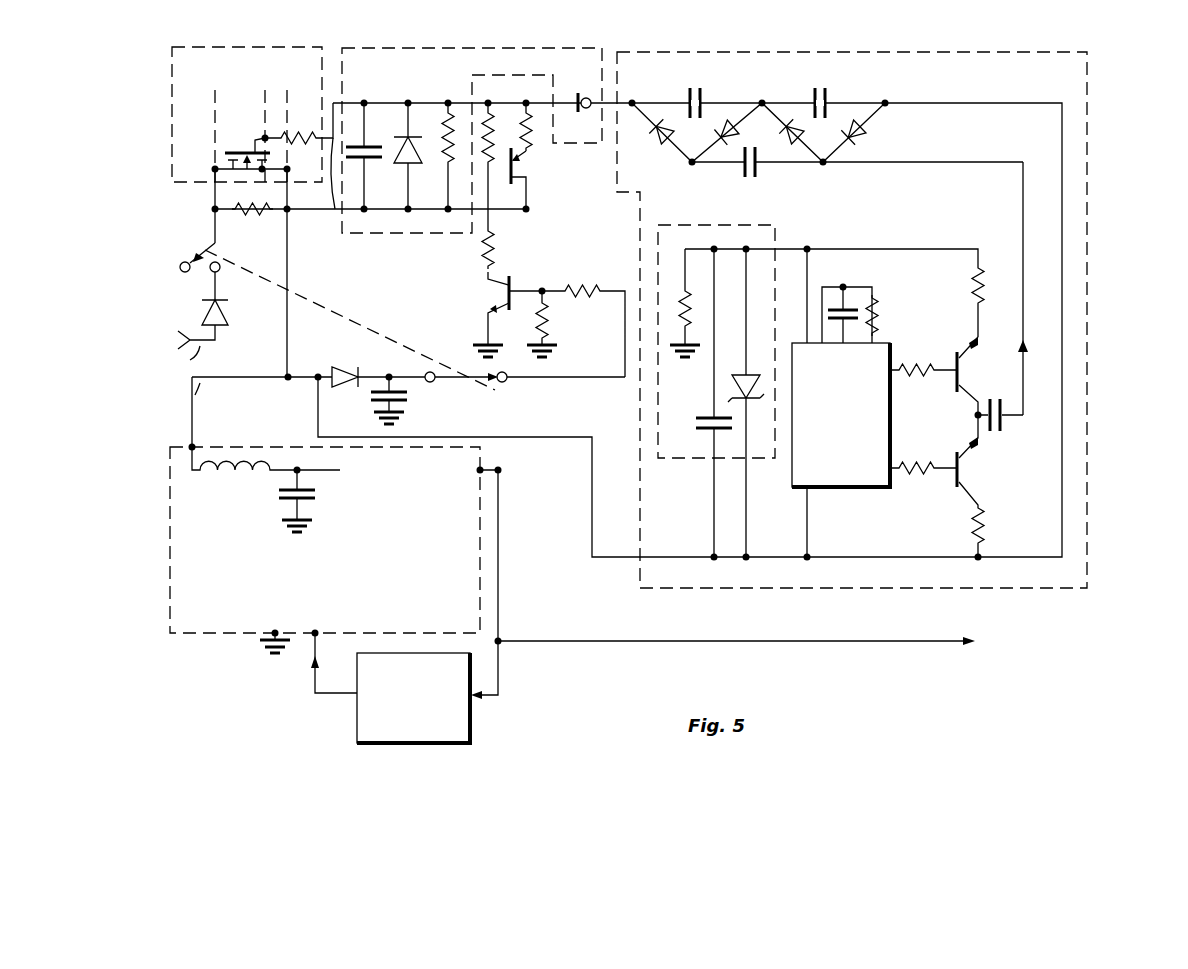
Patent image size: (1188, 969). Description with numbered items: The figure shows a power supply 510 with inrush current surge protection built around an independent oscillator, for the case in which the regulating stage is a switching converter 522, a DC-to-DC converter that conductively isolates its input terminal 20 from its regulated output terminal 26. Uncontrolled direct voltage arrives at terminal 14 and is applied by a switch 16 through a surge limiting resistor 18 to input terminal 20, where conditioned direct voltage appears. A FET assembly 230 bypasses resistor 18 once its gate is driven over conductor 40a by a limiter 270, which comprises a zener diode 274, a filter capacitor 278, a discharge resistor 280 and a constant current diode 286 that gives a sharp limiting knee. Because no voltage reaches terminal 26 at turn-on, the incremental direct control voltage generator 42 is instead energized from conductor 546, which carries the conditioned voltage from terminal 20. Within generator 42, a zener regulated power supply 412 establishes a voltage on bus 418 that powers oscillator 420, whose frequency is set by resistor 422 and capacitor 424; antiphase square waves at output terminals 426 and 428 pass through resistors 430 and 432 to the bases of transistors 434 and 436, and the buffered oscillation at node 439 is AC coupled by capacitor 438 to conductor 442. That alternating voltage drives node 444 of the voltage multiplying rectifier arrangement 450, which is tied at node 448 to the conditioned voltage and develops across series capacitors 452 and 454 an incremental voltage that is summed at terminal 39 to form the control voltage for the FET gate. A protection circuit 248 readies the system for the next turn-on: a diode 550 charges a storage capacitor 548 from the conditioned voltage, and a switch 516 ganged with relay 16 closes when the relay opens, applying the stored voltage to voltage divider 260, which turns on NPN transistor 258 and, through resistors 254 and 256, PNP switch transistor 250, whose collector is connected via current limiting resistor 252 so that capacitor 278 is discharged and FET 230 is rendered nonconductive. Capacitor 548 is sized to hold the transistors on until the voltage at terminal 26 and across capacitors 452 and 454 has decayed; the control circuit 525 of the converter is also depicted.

The input terminal 14 is at (193, 335).
The switch 16 is at (205, 252).
The surge limiting resistor 18 is at (248, 212).
The input terminal 20 is at (194, 446).
The output terminal 26 is at (500, 471).
The output terminal of the control voltage generator 39 is at (632, 102).
The conductor 40a is at (335, 200).
The incremental direct control voltage generator 42 is at (895, 222).
The FET assembly 230 is at (172, 90).
The protection circuit 248 is at (546, 247).
The PNP switch transistor 250 is at (510, 174).
The current limiting resistor 252 is at (530, 150).
The resistor 254 is at (488, 110).
The resistor 256 is at (494, 265).
The NPN transistor 258 is at (506, 291).
The voltage divider 260 is at (599, 329).
The limiter 270 is at (409, 82).
The zener diode 274 is at (406, 166).
The capacitor 278 is at (367, 145).
The resistor 280 is at (446, 138).
The constant current diode 286 is at (590, 108).
The zener regulated power supply 412 is at (665, 380).
The bus 418 is at (975, 250).
The oscillator 420 is at (870, 487).
The resistor 422 is at (877, 314).
The capacitor 424 is at (845, 289).
The output terminal 426 is at (892, 368).
The output terminal 428 is at (892, 466).
The resistor 430 is at (933, 376).
The resistor 432 is at (931, 474).
The transistor 434 is at (962, 350).
The transistor 436 is at (962, 468).
The capacitor 438 is at (1003, 400).
The node 439 is at (975, 416).
The conductor 442 is at (1023, 186).
The node 444 is at (825, 165).
The node 448 is at (886, 101).
The voltage multiplying rectifier arrangement 450 is at (781, 89).
The capacitor 452 is at (826, 101).
The capacitor 454 is at (688, 90).
The power supply 510 is at (602, 616).
The switch 516 is at (464, 375).
The switching converter 522 is at (218, 645).
The control circuit 525 is at (357, 724).
The conductor 546 is at (983, 106).
The storage capacitor 548 is at (392, 408).
The diode 550 is at (351, 368).